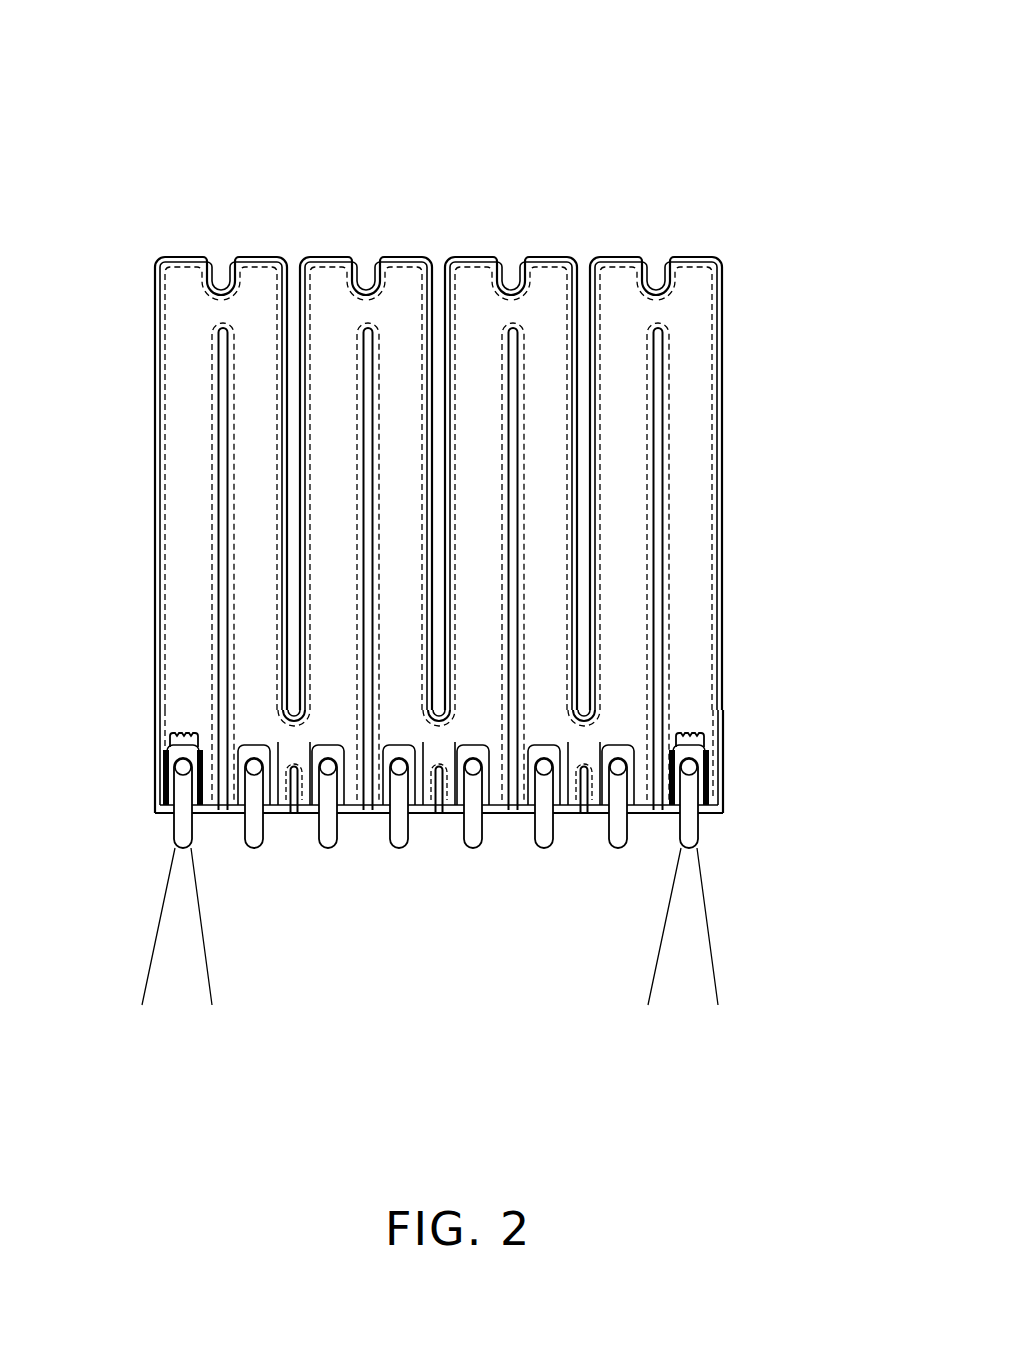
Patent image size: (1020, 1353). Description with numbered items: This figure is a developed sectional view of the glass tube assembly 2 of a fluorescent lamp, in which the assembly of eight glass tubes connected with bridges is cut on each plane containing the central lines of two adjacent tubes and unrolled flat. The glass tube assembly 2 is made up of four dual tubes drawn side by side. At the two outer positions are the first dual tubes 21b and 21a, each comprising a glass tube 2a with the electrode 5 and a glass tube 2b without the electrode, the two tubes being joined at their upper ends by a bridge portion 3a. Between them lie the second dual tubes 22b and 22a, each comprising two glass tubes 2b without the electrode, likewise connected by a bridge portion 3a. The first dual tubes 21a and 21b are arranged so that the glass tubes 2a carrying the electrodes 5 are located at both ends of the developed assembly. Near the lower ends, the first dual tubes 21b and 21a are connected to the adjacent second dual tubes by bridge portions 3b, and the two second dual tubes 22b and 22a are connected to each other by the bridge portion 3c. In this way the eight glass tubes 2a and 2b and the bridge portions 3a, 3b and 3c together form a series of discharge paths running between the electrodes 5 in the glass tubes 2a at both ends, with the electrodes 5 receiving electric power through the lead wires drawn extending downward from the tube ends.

The glass tube assembly 2 is at (814, 89).
The glass tube with the electrode 2a is at (178, 275).
The glass tube without the electrode 2b is at (272, 275).
The bridge portion 3a is at (228, 312).
The bridge portion 3b is at (294, 745).
The bridge portion 3c is at (439, 745).
The electrode 5 is at (183, 733).
The first dual tube 21a is at (735, 122).
The first dual tube 21b is at (295, 122).
The second dual tube 22a is at (463, 122).
The second dual tube 22b is at (320, 122).